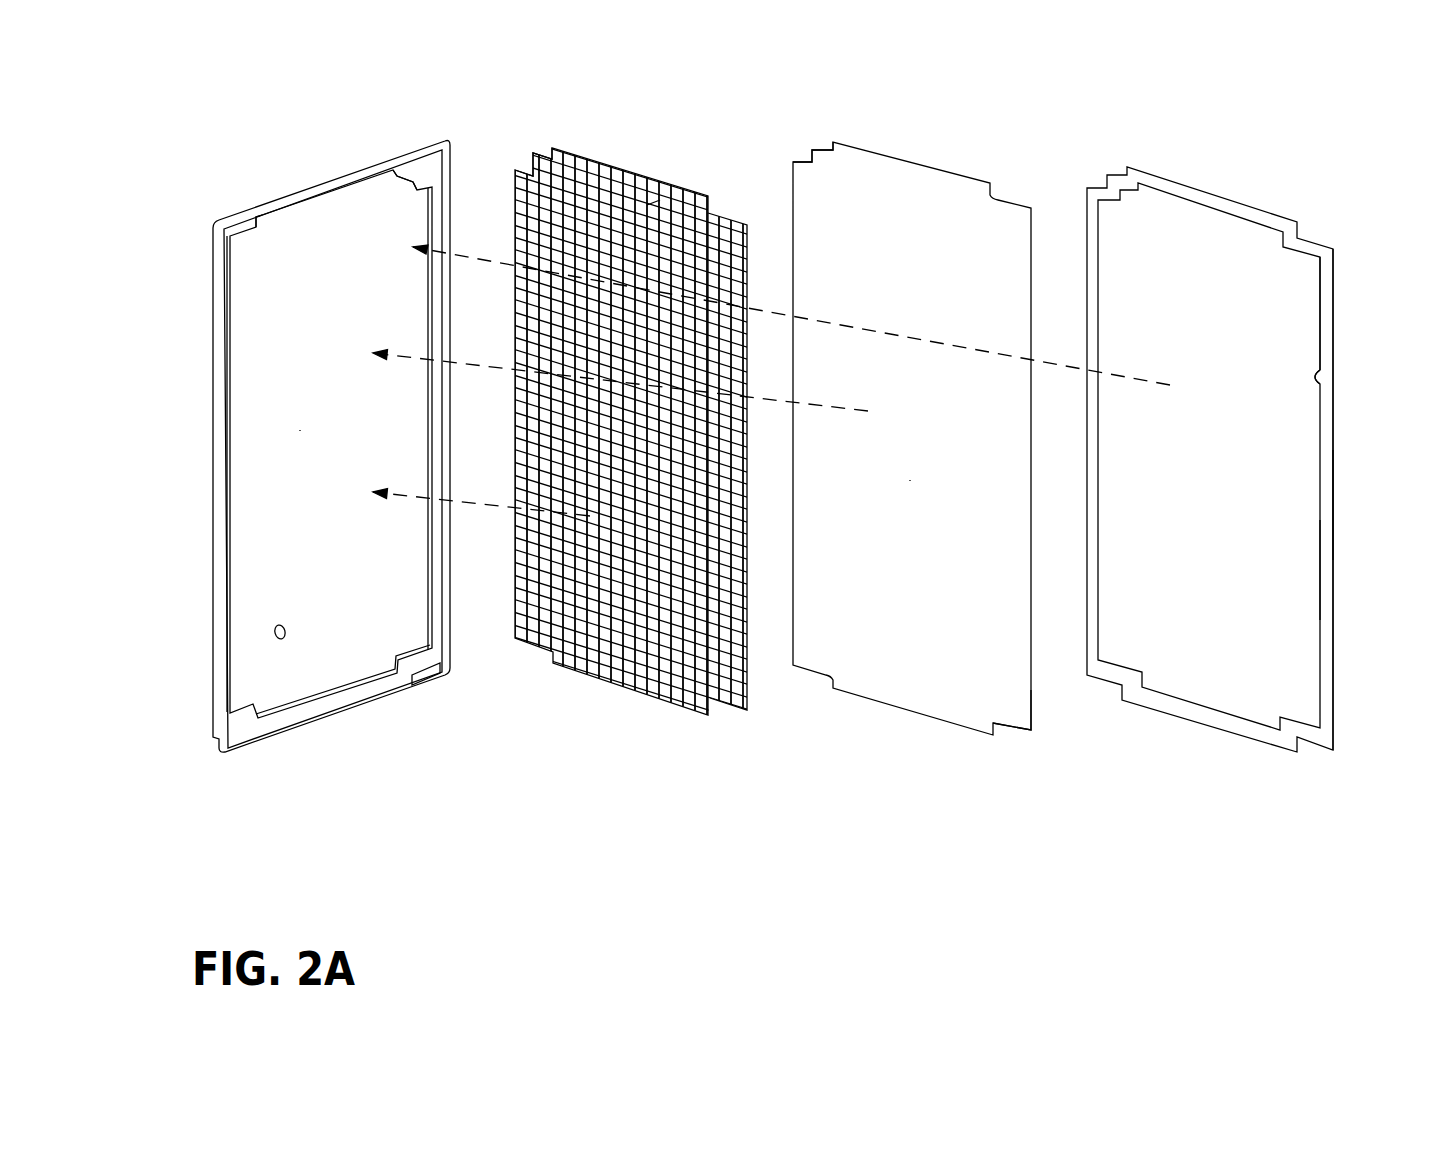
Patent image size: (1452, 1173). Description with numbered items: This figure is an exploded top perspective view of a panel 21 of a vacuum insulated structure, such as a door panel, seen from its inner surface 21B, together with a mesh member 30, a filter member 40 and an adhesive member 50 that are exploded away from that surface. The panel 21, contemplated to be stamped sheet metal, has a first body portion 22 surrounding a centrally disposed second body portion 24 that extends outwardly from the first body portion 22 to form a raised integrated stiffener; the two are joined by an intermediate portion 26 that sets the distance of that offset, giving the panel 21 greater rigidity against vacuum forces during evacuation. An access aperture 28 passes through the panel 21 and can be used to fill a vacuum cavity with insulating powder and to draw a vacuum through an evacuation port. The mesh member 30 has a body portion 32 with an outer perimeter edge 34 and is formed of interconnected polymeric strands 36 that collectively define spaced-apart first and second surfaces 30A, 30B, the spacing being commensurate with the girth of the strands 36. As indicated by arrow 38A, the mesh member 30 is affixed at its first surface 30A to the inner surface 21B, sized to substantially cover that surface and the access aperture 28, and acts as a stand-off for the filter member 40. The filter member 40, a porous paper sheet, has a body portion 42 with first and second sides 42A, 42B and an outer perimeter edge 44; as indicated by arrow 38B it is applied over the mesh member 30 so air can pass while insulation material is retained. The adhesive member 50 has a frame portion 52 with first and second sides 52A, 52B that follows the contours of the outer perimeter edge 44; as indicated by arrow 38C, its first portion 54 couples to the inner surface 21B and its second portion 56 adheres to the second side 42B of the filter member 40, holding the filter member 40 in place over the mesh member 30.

The panel 21 is at (278, 158).
The inner surface 21B is at (278, 452).
The first body portion 22 is at (247, 222).
The second body portion 24 is at (255, 262).
The intermediate portion 26 is at (410, 182).
The access aperture 28 is at (272, 632).
The mesh member 30 is at (651, 428).
The first surface 30A is at (606, 640).
The second surface 30B is at (757, 686).
The body portion 32 is at (630, 429).
The outer perimeter edge 34 is at (556, 150).
The polymeric strands 36 is at (657, 225).
The arrow 38A is at (490, 505).
The arrow 38B is at (478, 363).
The arrow 38C is at (497, 262).
The filter member 40 is at (940, 435).
The body portion 42 is at (915, 205).
The first side 42A is at (892, 503).
The second side 42B is at (1032, 698).
The outer perimeter edge 44 is at (878, 150).
The adhesive member 50 is at (1208, 185).
The frame portion 52 is at (1327, 308).
The first side 52A is at (1325, 565).
The second side 52B is at (1337, 497).
The first portion 54 is at (1334, 370).
The second portion 56 is at (1318, 378).